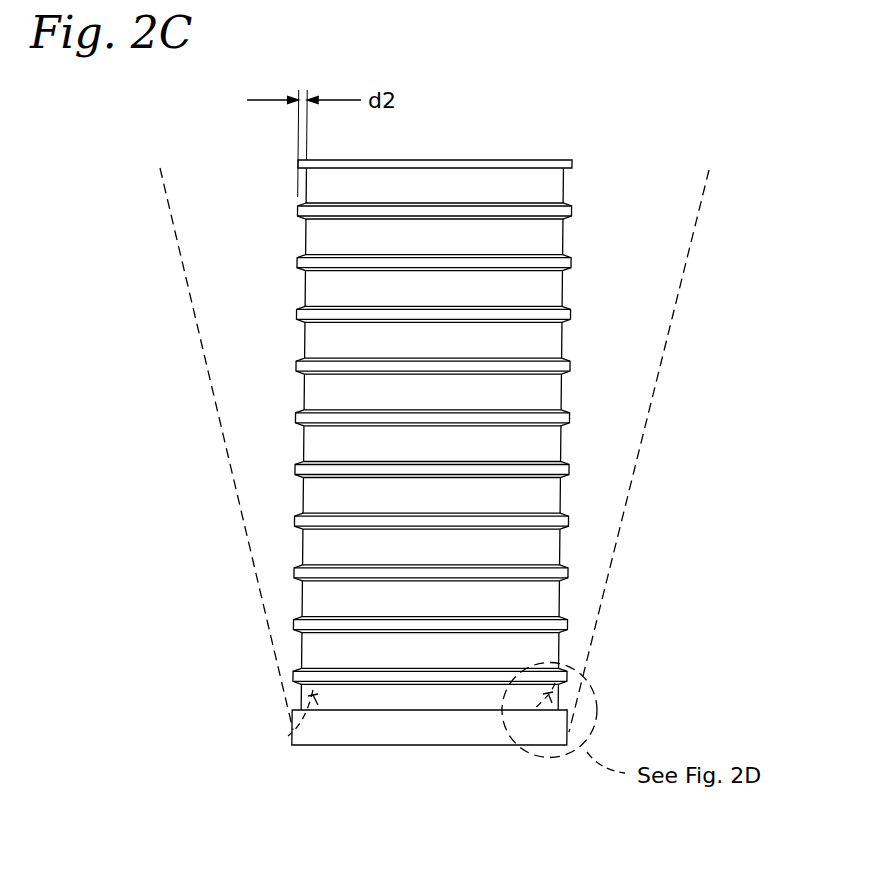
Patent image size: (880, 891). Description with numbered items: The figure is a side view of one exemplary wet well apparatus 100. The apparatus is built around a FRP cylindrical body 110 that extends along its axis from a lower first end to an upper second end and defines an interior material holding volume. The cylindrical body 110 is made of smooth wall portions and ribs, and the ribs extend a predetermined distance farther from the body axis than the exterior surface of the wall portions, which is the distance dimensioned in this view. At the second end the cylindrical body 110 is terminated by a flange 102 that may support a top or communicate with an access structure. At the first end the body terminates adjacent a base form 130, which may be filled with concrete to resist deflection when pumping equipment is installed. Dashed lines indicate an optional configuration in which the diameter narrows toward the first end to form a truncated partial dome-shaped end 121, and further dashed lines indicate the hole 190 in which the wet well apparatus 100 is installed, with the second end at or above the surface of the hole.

The wet well apparatus 100 is at (272, 445).
The flange 102 is at (570, 158).
The cylindrical body 110 is at (573, 335).
The truncated partial dome-shaped end 121 is at (292, 733).
The base form 130 is at (387, 745).
The hole 190 is at (182, 258).